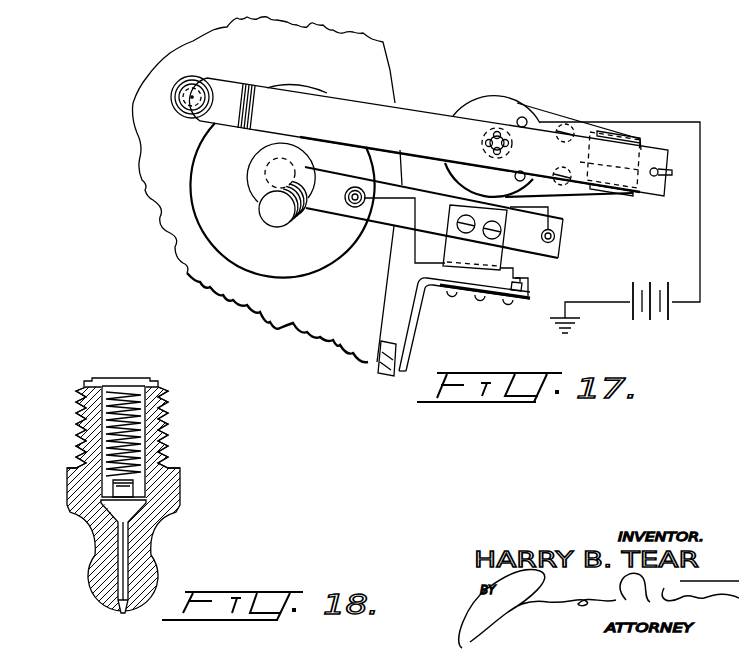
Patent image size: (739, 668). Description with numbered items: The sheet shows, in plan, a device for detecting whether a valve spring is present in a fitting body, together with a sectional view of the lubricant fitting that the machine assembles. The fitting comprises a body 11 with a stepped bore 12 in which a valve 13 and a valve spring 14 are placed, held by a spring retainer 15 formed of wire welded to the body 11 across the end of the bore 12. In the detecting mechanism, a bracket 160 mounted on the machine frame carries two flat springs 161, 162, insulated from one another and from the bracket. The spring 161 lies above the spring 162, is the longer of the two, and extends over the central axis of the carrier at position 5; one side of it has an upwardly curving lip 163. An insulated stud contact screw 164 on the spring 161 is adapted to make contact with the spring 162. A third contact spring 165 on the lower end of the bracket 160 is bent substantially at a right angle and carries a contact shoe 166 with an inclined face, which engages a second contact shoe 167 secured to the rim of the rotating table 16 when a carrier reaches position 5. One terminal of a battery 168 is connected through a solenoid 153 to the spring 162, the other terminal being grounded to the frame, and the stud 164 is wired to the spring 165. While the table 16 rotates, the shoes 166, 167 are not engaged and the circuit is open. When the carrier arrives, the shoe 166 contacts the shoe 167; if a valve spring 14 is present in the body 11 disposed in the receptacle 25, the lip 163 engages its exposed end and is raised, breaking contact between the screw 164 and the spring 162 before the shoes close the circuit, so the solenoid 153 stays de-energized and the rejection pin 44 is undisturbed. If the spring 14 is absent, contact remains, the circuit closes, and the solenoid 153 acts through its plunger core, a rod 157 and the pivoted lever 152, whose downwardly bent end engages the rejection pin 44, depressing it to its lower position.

In FIG. 17, the position 5 is at (190, 168).
In FIG. 18, the body 11 is at (67, 492).
In FIG. 18, the stepped bore 12 is at (100, 430).
In FIG. 18, the valve 13 is at (98, 520).
In FIG. 18, the valve spring 14 is at (103, 408).
In FIG. 18, the spring retainer 15 is at (125, 380).
In FIG. 17, the rotating table 16 is at (393, 70).
In FIG. 17, the receptacle 25 is at (248, 167).
In FIG. 17, the rejection pin 44 is at (202, 78).
In FIG. 17, the pivoted lever 152 is at (422, 115).
In FIG. 17, the solenoid 153 is at (518, 108).
In FIG. 17, the rod 157 is at (497, 136).
In FIG. 17, the bracket 160 is at (505, 262).
In FIG. 17, the spring 161 is at (392, 222).
In FIG. 17, the spring 162 is at (566, 238).
In FIG. 17, the lip 163 is at (280, 227).
In FIG. 17, the stud contact screw 164 is at (352, 207).
In FIG. 17, the contact spring 165 is at (498, 300).
In FIG. 17, the contact shoe 166 is at (390, 357).
In FIG. 17, the contact shoe 167 is at (377, 350).
In FIG. 17, the battery 168 is at (647, 325).